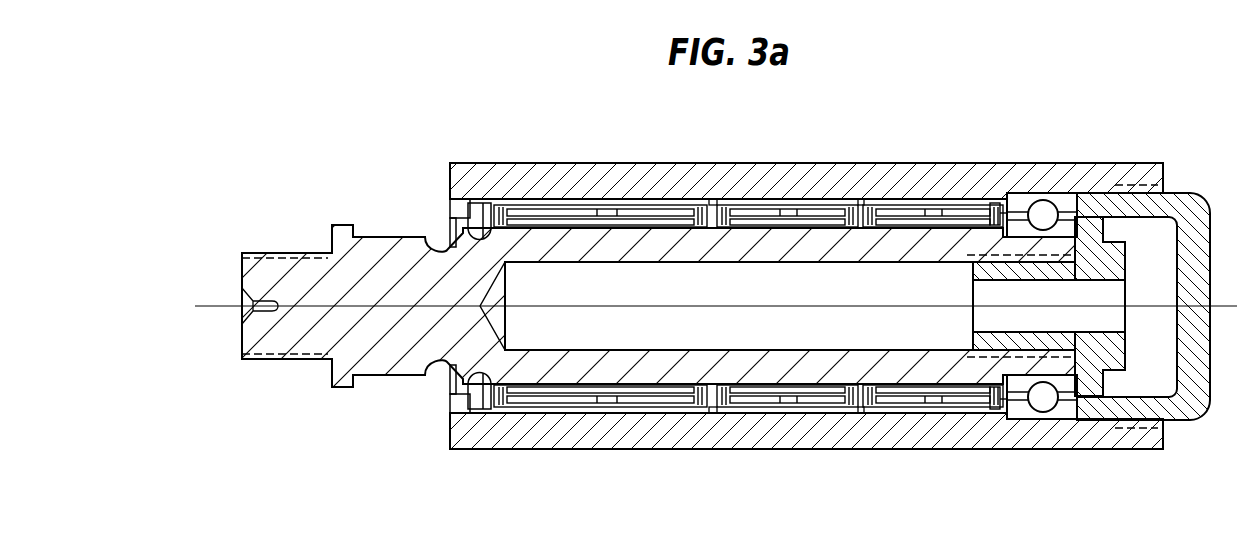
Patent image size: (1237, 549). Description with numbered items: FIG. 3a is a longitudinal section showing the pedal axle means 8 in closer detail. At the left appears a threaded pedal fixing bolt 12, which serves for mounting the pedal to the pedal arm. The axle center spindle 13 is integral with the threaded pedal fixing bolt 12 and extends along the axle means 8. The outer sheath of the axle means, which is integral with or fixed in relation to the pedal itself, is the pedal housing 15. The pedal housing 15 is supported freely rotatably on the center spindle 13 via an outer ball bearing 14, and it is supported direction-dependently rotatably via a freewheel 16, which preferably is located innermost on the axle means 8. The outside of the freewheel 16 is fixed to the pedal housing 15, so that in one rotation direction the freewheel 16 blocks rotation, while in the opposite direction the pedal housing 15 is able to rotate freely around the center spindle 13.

The pedal axle means 8 is at (726, 304).
The threaded pedal fixing bolt 12 is at (297, 363).
The axle center spindle 13 is at (785, 224).
The outer ball bearing 14 is at (1041, 194).
The pedal housing 15 is at (557, 163).
The freewheel 16 is at (523, 414).